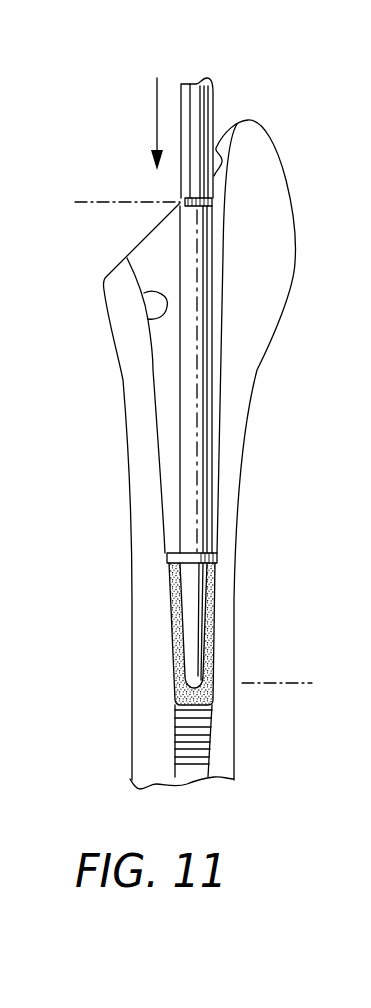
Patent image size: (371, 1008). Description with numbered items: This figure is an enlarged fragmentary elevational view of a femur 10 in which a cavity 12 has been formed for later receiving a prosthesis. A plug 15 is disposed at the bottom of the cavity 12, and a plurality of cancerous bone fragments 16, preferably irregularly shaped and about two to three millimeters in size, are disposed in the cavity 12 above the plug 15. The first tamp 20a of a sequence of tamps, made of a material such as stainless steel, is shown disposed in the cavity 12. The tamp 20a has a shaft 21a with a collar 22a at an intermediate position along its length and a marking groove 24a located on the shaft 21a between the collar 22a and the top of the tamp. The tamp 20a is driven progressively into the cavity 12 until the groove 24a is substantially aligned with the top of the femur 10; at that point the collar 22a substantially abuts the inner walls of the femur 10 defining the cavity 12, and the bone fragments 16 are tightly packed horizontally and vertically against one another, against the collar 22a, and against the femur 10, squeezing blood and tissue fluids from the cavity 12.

The femur 10 is at (308, 190).
The cavity 12 is at (162, 314).
The plug 15 is at (200, 735).
The cancerous bone fragments 16 is at (207, 629).
The tamp 20a is at (214, 458).
The shaft 21a is at (190, 630).
The collar 22a is at (190, 560).
The groove 24a is at (191, 200).